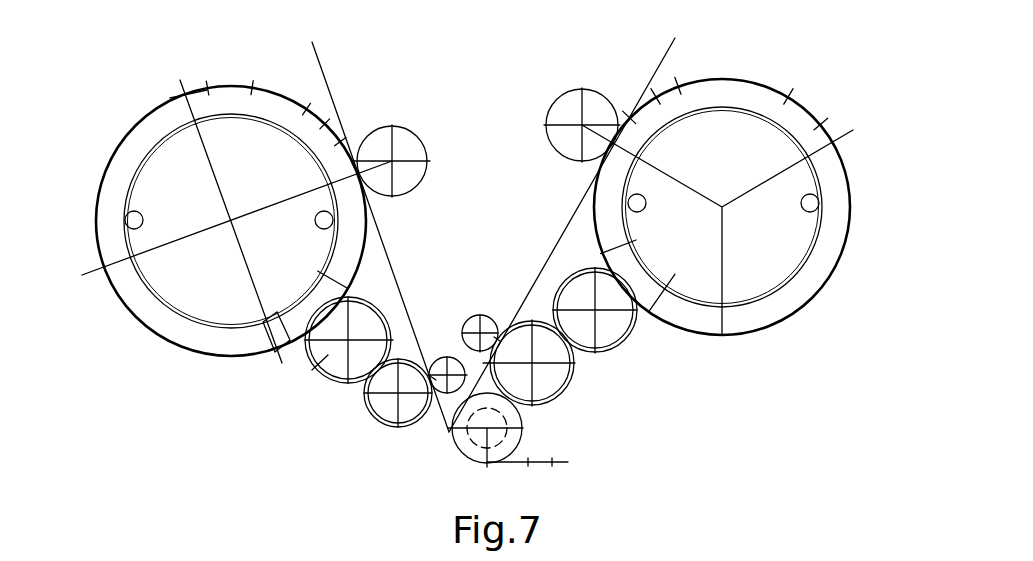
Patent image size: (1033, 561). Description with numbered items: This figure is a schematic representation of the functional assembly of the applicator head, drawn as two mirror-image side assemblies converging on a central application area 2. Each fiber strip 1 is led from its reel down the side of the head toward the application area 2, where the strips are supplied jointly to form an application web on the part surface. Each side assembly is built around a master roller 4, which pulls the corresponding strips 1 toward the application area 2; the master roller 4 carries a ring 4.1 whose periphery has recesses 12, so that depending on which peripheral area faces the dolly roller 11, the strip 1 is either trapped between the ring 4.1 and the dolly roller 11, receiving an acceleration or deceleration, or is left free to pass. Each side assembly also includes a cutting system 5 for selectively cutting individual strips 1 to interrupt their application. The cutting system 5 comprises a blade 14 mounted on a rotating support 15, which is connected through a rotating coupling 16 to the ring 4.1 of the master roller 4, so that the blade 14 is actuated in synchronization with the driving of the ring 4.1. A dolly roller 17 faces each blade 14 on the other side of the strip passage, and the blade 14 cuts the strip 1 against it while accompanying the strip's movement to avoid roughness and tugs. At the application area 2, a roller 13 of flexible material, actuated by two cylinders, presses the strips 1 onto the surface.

The fiber strip 1 is at (325, 83).
The application area 2 is at (483, 467).
The master roller 4 is at (170, 352).
The ring 4.1 is at (142, 138).
The cutting system 5 is at (378, 435).
The dolly roller 11 is at (400, 143).
The recess 12 is at (175, 95).
The roller 13 is at (510, 440).
The blade 14 is at (433, 373).
The rotating support 15 is at (412, 412).
The rotating coupling 16 is at (327, 357).
The dolly roller 17 is at (442, 363).